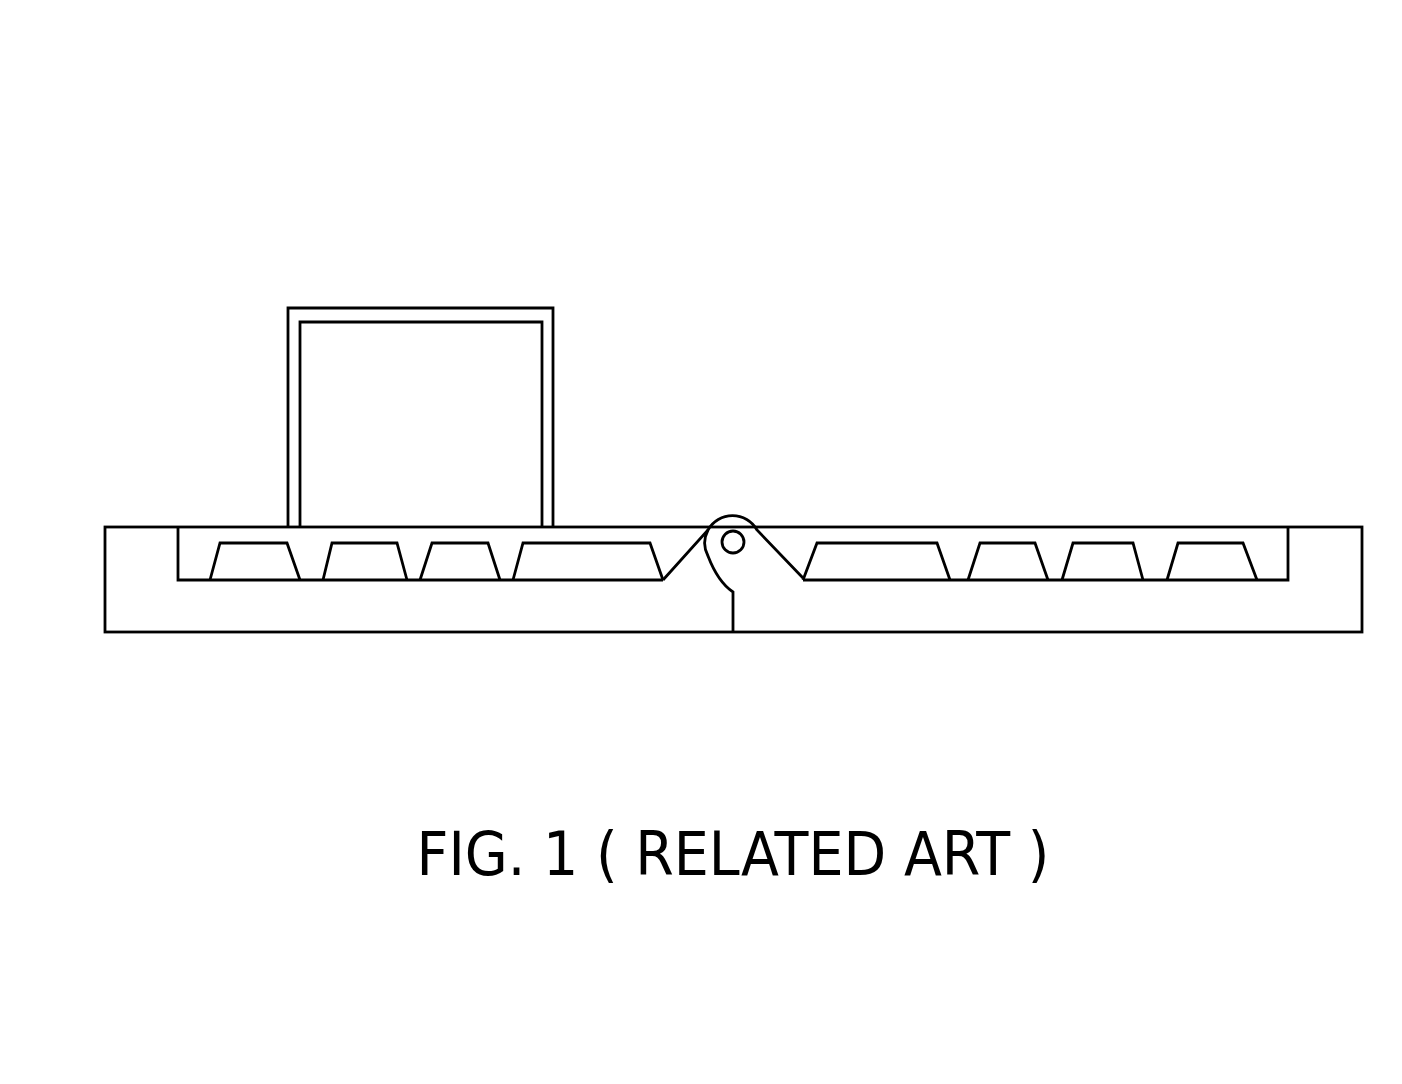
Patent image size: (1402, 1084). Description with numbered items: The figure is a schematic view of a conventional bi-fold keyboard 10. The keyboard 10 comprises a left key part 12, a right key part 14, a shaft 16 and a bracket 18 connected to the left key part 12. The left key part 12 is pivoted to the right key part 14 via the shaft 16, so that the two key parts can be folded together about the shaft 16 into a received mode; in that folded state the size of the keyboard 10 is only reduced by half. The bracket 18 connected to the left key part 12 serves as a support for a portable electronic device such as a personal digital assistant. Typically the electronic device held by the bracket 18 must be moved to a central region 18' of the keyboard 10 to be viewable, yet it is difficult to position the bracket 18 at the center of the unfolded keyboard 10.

The bi-fold keyboard 10 is at (135, 193).
The left key part 12 is at (357, 613).
The right key part 14 is at (1045, 613).
The shaft 16 is at (732, 531).
The bracket 18 is at (366, 417).
The central region 18' is at (749, 324).